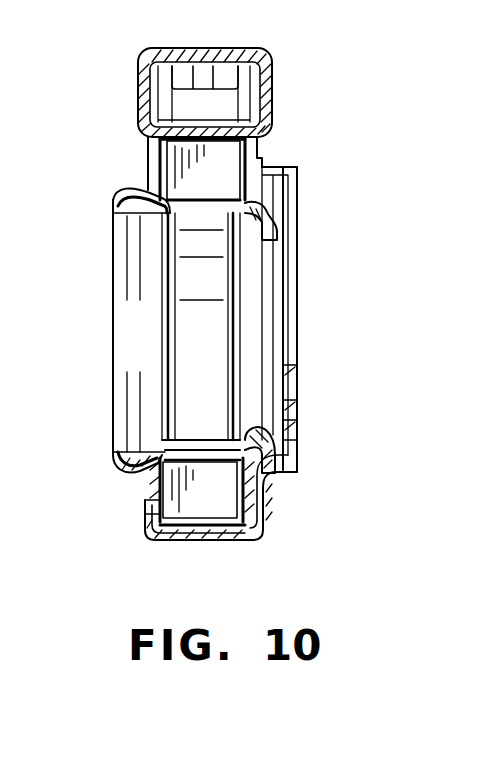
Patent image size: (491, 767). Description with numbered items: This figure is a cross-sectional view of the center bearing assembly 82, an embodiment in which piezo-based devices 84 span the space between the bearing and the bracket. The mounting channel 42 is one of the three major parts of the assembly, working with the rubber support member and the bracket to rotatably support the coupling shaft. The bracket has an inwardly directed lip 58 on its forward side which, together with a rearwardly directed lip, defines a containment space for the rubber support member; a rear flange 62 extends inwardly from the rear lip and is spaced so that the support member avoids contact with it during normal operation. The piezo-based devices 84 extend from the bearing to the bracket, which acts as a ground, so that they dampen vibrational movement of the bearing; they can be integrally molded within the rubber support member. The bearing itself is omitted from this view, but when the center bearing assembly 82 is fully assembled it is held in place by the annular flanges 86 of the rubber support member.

The mounting channel 42 is at (138, 97).
The inwardly directed lip 58 is at (150, 527).
The rear flange 62 is at (258, 503).
The center bearing assembly 82 is at (92, 312).
The piezo-based devices 84 is at (257, 162).
The annular flanges 86 is at (115, 226).